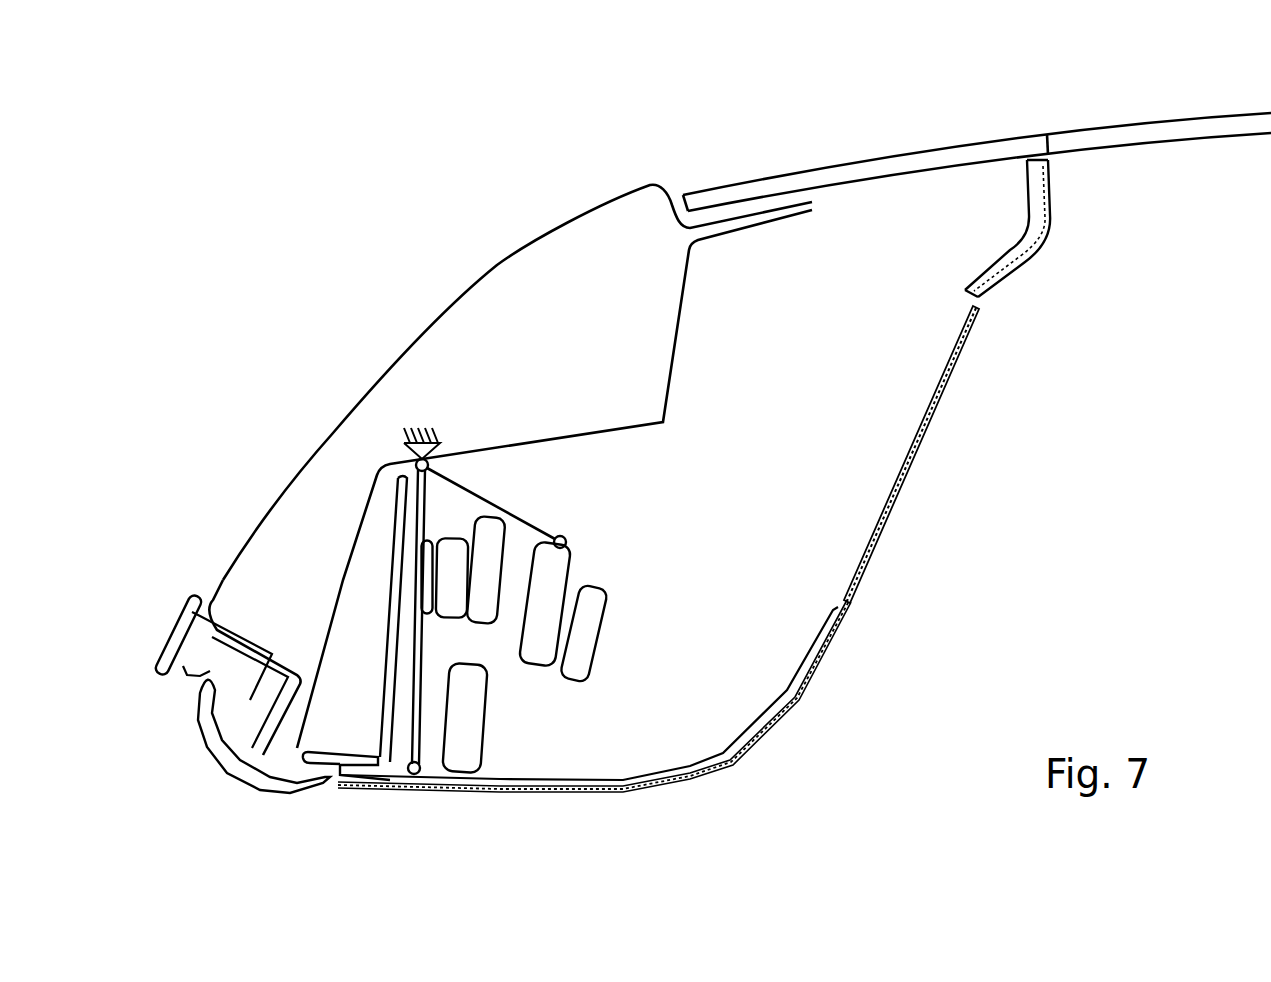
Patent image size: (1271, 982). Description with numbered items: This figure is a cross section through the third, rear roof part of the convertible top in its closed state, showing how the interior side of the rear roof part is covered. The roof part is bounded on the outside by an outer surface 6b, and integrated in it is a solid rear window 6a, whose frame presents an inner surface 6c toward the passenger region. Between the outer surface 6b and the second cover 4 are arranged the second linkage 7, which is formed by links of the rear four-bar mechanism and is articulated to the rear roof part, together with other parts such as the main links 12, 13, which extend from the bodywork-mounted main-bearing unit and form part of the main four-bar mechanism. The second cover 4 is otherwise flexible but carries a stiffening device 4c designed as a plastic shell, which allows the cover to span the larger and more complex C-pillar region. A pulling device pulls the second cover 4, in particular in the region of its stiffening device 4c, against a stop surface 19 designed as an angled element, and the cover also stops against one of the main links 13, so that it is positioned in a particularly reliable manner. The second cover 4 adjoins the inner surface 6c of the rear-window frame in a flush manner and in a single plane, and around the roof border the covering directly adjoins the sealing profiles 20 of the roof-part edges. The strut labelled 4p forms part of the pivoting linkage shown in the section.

The second cover 4 is at (920, 443).
The stiffening device 4c is at (762, 715).
The pivot / strut of the blind 4p is at (447, 820).
The solid rear window 6a is at (1170, 132).
The outer surface 6b is at (375, 382).
The inner surface 6c is at (1045, 242).
The second linkage 7 is at (640, 560).
The main link 12 is at (558, 556).
The main link 13 is at (463, 743).
The stop surface 19 is at (380, 753).
The sealing profile 20 is at (228, 753).